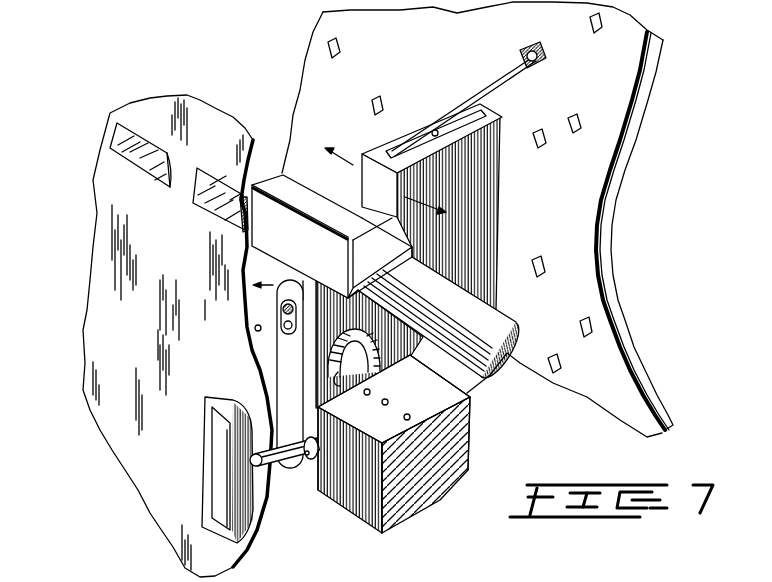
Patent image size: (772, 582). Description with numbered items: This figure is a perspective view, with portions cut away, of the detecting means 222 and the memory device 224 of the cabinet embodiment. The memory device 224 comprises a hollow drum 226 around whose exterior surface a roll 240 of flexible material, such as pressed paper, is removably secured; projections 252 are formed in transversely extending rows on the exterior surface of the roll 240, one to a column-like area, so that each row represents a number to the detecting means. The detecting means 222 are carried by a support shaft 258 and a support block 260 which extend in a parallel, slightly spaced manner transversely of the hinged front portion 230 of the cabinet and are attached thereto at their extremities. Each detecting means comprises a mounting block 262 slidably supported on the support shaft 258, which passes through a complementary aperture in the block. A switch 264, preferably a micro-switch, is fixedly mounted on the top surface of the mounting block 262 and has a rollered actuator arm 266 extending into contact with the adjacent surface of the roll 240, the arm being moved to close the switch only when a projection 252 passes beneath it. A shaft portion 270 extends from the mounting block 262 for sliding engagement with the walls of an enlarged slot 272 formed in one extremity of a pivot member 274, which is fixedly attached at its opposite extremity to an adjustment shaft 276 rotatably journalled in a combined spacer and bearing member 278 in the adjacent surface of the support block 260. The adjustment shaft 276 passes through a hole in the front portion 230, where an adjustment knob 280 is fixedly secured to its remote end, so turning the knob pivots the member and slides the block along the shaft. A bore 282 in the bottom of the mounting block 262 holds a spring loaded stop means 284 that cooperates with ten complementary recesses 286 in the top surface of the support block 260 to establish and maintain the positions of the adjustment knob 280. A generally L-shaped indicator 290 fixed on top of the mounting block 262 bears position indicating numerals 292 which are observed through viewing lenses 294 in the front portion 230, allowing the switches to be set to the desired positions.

The detecting means 222 is at (270, 175).
The memory device 224 is at (624, 179).
The hollow drum 226 is at (642, 372).
The hinged front portion 230 is at (88, 397).
The roll 240 is at (615, 320).
The projections 252 is at (575, 115).
The support shaft 258 is at (511, 311).
The support block 260 is at (468, 465).
The mounting block 262 is at (494, 223).
The switch 264 is at (501, 128).
The rollered actuator arm 266 is at (485, 87).
The shaft portion 270 is at (262, 340).
The enlarged slot 272 is at (283, 307).
The pivot member 274 is at (278, 392).
The adjustment shaft 276 is at (280, 478).
The combined spacer and bearing member 278 is at (319, 445).
The adjustment knob 280 is at (205, 472).
The bore 282 is at (345, 383).
The spring loaded stop means 284 is at (349, 382).
The recesses 286 is at (385, 405).
The L-shaped indicator 290 is at (323, 207).
The position indicating numerals 292 is at (318, 243).
The viewing lenses 294 is at (155, 180).